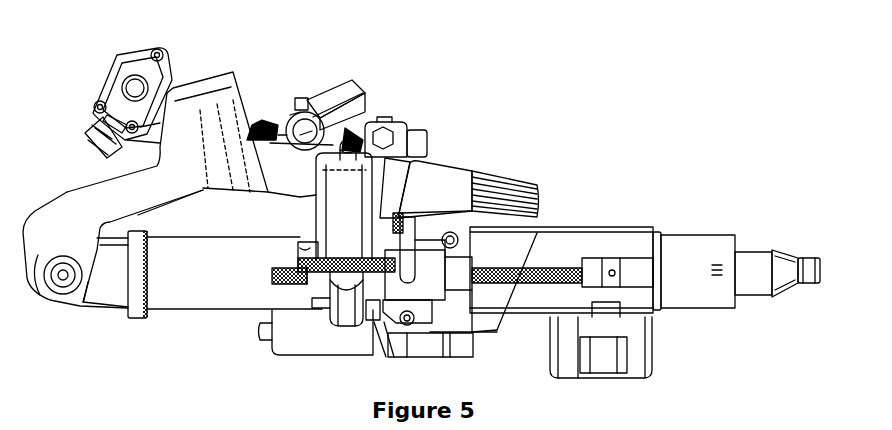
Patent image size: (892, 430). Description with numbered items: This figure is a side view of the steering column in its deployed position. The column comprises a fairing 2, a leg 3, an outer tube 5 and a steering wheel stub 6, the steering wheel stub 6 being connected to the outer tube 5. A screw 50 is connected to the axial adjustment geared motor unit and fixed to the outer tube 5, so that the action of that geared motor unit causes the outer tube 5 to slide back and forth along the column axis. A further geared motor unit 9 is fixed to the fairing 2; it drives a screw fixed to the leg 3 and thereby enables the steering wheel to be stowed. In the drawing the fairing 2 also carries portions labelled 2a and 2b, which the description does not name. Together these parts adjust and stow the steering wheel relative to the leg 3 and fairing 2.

The fairing 2 is at (455, 178).
The clamping lever 2a is at (253, 127).
The electric motor 2b is at (353, 193).
The leg 3 is at (528, 187).
The outer tube 5 is at (602, 236).
The steering wheel stub 6 is at (780, 268).
The geared motor unit 9 is at (113, 68).
The screw 50 is at (535, 280).